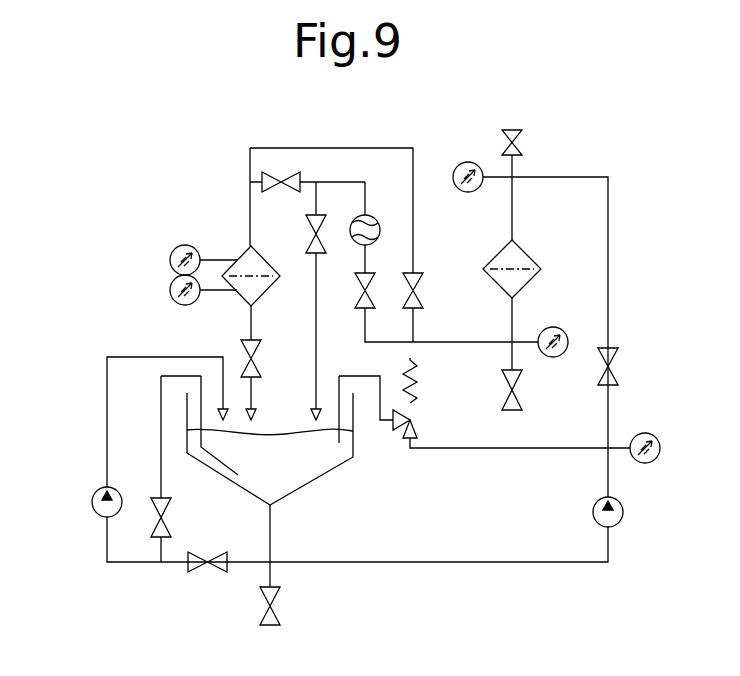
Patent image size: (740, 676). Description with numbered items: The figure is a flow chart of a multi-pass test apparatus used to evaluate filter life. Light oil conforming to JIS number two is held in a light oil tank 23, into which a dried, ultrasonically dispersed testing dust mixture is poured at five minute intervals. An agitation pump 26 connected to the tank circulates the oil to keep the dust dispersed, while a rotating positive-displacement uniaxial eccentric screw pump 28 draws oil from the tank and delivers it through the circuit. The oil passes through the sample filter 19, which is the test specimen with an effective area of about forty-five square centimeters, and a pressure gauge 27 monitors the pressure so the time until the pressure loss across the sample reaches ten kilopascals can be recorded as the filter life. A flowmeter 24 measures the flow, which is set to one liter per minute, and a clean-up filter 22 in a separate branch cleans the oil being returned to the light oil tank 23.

The sample filter 19 is at (531, 252).
The clean-up filter 22 is at (243, 250).
The light oil tank 23 is at (312, 480).
The flowmeter 24 is at (372, 214).
The agitation pump 26 is at (92, 502).
The pressure gauge 27 is at (554, 328).
The rotating positive-displacement uniaxial eccentric screw pump 28 is at (623, 514).